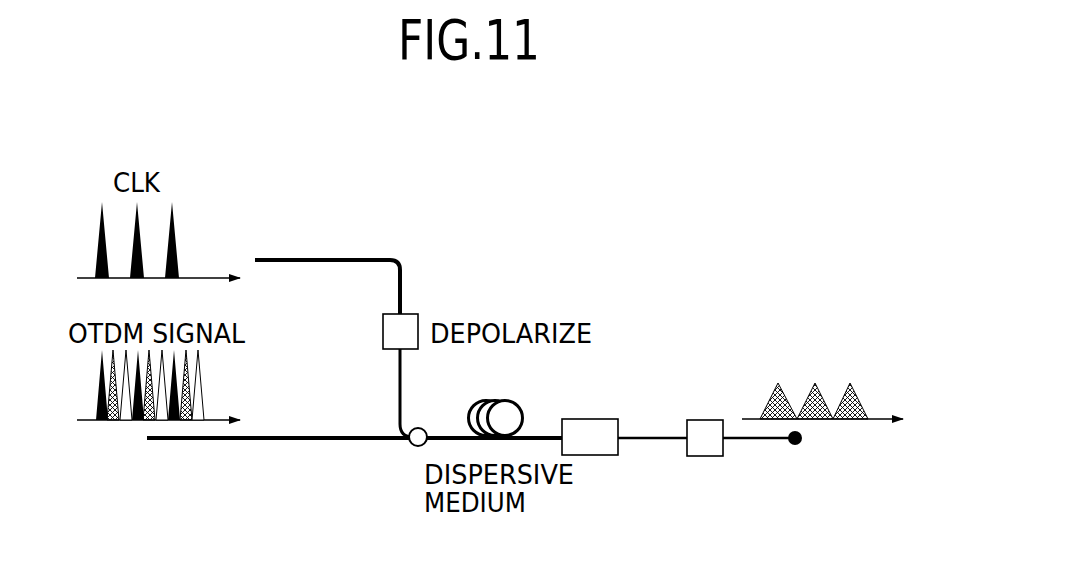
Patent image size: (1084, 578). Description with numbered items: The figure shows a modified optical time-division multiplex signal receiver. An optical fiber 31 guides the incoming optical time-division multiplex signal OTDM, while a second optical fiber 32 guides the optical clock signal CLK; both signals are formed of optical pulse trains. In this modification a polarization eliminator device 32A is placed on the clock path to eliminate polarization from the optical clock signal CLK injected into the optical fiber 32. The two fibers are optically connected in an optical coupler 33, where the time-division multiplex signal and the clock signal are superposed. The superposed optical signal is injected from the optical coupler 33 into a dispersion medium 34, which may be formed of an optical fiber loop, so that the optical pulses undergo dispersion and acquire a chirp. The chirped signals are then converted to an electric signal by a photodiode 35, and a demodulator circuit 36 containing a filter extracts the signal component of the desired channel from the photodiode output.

The optical fiber 31 is at (316, 442).
The optical fiber 32 is at (326, 257).
The polarization eliminator device 32A is at (383, 332).
The optical coupler 33 is at (424, 428).
The dispersion medium 34 is at (492, 398).
The photodiode 35 is at (605, 456).
The demodulator circuit 36 is at (704, 418).